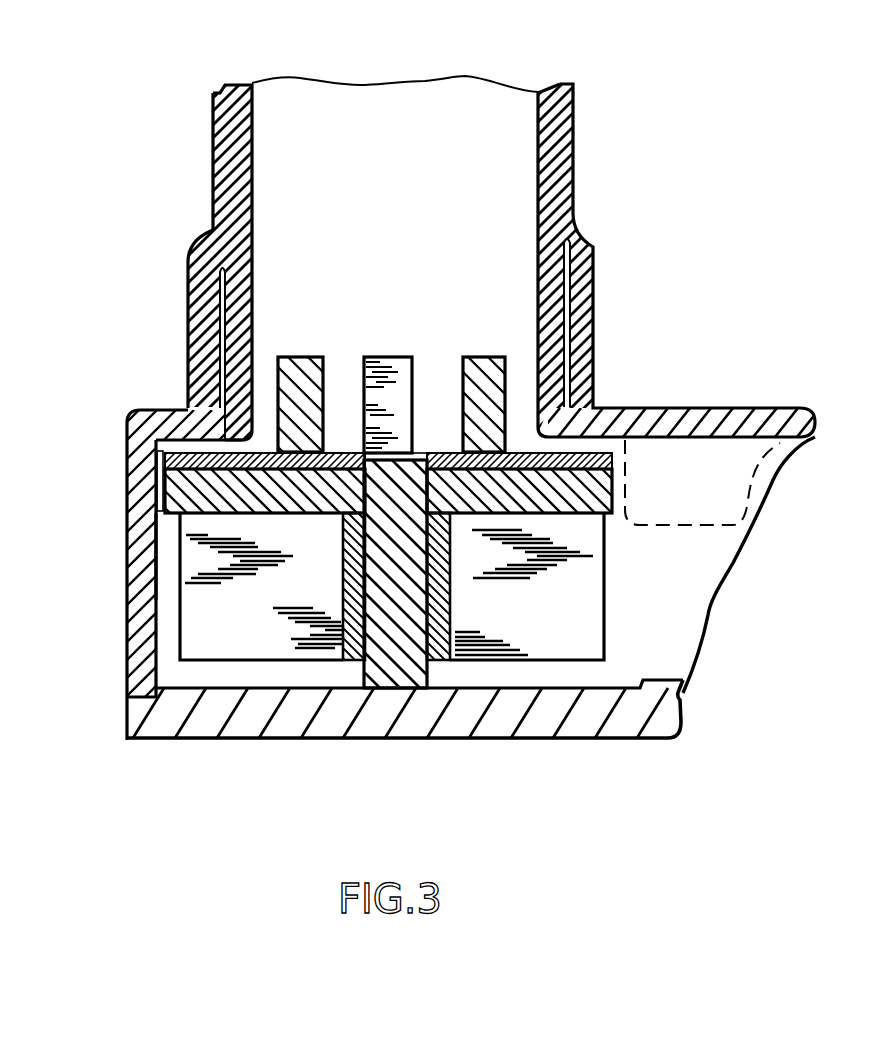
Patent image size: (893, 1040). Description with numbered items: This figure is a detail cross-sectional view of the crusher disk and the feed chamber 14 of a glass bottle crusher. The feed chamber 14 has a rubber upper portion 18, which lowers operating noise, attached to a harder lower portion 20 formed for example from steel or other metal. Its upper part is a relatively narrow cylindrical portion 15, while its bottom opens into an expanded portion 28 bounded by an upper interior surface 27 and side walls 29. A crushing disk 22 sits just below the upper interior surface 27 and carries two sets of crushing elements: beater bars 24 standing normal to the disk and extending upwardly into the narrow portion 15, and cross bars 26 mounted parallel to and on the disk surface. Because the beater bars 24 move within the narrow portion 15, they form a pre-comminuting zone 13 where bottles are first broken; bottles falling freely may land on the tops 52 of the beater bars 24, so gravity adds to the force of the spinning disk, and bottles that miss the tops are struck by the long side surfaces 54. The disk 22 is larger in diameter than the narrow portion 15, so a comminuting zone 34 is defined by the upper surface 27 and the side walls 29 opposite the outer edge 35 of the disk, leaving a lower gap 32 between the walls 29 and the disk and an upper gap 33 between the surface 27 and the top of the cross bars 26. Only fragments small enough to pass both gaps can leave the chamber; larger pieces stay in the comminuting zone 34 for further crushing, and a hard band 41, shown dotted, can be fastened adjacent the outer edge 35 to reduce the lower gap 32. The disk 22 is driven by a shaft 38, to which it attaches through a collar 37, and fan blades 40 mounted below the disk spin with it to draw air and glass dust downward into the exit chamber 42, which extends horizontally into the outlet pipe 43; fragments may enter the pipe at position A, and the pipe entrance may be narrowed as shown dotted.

The pre-comminuting zone 13 is at (357, 389).
The feed chamber 14 is at (410, 210).
The narrow cylindrical portion 15 is at (538, 178).
The rubber upper portion 18 is at (576, 185).
The lower portion 20 is at (253, 323).
The crushing disk 22 is at (603, 515).
The beater bars 24 is at (458, 361).
The cross bars 26 is at (612, 465).
The upper interior surface 27 is at (187, 350).
The expanded portion 28 is at (168, 594).
The side walls 29 is at (130, 440).
The lower gap 32 is at (168, 534).
The upper gap 33 is at (150, 408).
The comminuting zone 34 is at (137, 412).
The outer edge 35 is at (130, 463).
The collar 37 is at (442, 647).
The shaft 38 is at (397, 650).
The fan blades 40 is at (260, 644).
The band 41 is at (160, 500).
The exit chamber 42 is at (295, 675).
The outlet pipe 43 is at (687, 598).
The tops 52 is at (402, 352).
The long side surfaces 54 is at (396, 415).